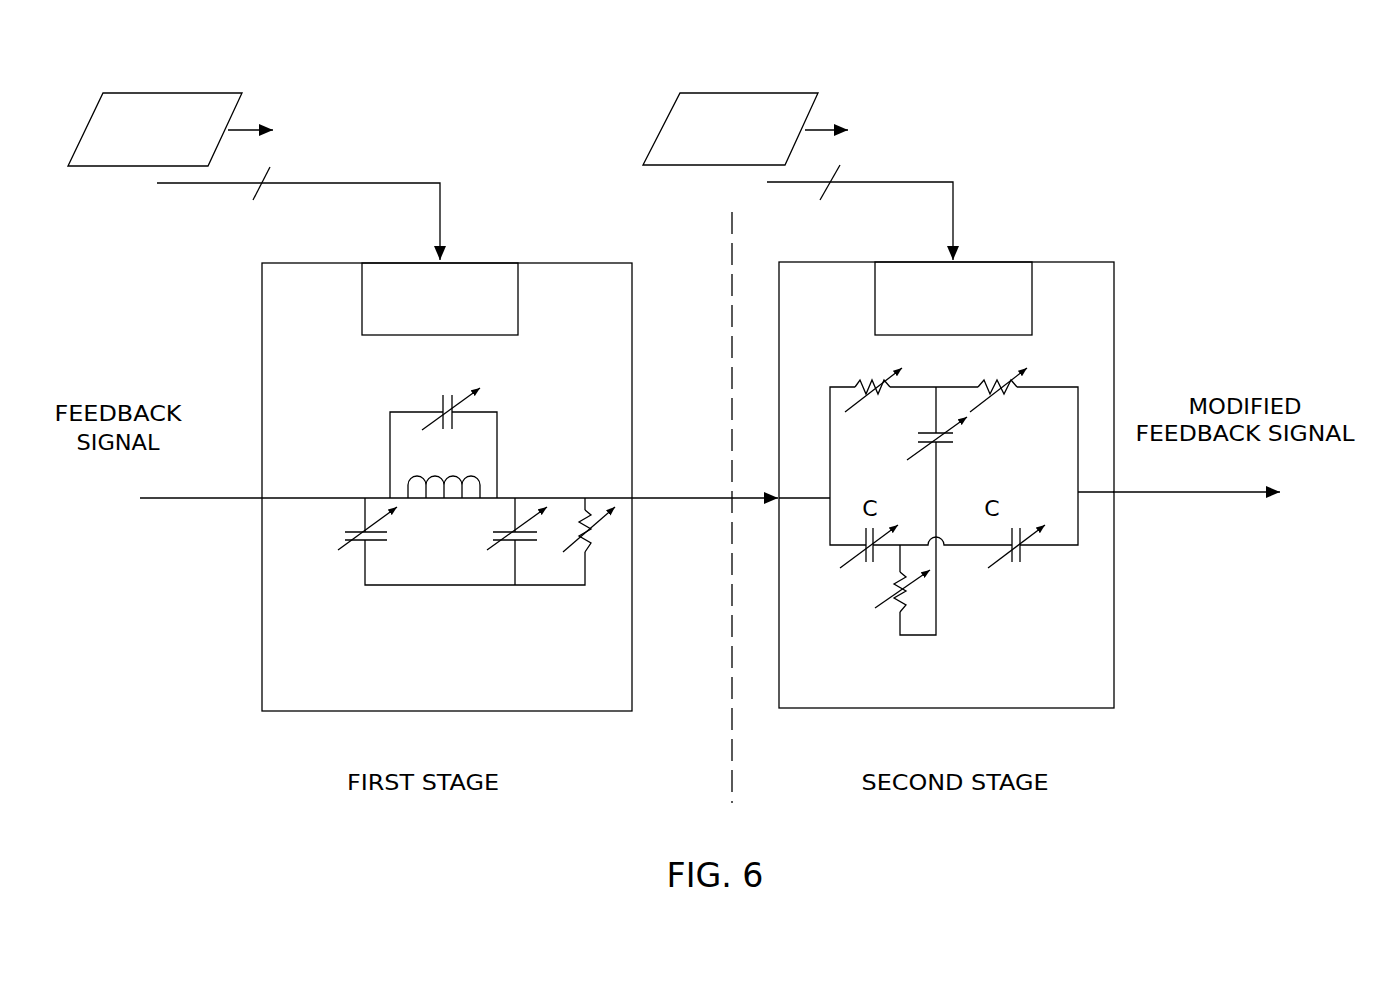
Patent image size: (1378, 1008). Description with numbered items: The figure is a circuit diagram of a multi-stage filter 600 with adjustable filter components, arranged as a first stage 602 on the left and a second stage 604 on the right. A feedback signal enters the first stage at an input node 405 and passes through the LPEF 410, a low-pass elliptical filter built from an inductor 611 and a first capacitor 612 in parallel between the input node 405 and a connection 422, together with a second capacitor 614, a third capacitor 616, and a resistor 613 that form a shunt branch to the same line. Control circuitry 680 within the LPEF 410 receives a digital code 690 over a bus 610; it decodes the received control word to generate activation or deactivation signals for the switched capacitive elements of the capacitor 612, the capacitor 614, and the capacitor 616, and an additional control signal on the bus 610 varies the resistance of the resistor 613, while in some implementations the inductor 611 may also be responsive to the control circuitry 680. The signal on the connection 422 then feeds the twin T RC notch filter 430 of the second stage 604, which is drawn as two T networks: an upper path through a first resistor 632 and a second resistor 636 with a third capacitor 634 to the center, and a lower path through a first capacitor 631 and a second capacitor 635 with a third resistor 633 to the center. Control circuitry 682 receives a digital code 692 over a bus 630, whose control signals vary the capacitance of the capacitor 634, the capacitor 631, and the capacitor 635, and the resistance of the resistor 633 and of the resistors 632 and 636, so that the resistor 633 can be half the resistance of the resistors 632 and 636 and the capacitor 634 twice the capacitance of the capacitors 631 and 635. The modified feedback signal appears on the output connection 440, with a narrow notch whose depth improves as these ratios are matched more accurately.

The multi-stage filter 600 is at (1080, 98).
The first stage 602 is at (605, 157).
The second stage 604 is at (1114, 160).
The digital code 690 is at (258, 73).
The digital code 692 is at (810, 93).
The bus 610 is at (332, 183).
The bus 630 is at (890, 182).
The input node 405 is at (162, 497).
The connection 422 is at (668, 508).
The connection 440 is at (1191, 492).
The LPEF 410 is at (580, 263).
The twin T RC notch filter 430 is at (1015, 262).
The control circuitry 680 is at (518, 315).
The control circuitry 682 is at (1032, 315).
The inductor 611 is at (463, 497).
The first capacitor 612 is at (448, 384).
The resistor 613 is at (567, 524).
The second capacitor 614 is at (356, 547).
The third capacitor 616 is at (508, 543).
The first capacitor 631 is at (870, 570).
The first resistor 632 is at (874, 372).
The third resistor 633 is at (887, 593).
The third capacitor 634 is at (925, 452).
The second capacitor 635 is at (1017, 573).
The second resistor 636 is at (1000, 373).